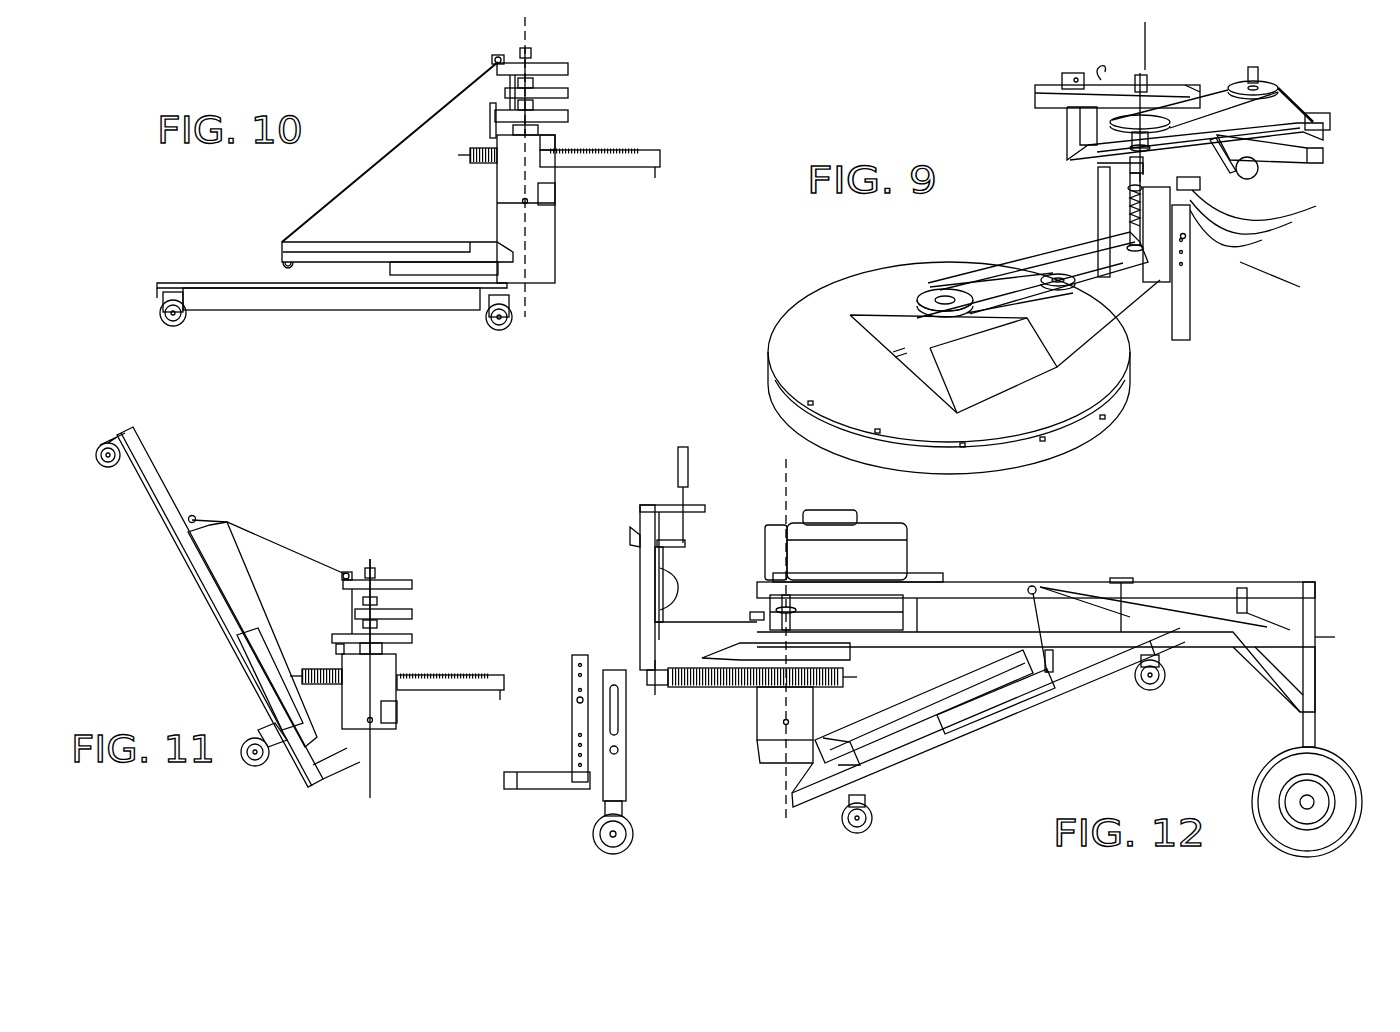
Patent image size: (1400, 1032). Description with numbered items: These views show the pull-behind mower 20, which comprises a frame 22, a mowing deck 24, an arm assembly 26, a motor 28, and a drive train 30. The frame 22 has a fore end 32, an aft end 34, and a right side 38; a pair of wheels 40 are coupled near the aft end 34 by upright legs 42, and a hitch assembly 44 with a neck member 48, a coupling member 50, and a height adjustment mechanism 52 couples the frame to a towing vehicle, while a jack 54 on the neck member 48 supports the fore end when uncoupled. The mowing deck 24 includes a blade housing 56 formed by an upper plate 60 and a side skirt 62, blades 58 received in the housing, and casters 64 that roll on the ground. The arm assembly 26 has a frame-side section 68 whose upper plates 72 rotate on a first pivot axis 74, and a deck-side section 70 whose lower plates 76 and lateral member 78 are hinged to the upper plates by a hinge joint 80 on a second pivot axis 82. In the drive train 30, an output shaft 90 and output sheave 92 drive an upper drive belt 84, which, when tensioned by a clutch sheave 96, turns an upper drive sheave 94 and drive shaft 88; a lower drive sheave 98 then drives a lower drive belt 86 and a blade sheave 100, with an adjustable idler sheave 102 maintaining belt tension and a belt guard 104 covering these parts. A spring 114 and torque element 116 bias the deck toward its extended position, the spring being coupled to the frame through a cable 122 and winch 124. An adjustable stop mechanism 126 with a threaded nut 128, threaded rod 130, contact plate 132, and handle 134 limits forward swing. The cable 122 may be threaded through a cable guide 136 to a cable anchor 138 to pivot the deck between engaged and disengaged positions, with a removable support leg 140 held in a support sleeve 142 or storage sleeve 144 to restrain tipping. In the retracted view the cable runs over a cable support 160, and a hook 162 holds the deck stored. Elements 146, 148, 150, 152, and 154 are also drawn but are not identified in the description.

In FIG. 10, the pull-behind mower 20 is at (615, 97).
In FIG. 9, the pull-behind mower 20 is at (1130, 68).
In FIG. 11, the pull-behind mower 20 is at (361, 515).
In FIG. 12, the pull-behind mower 20 is at (620, 462).
In FIG. 9, the frame 22 is at (1066, 138).
In FIG. 12, the frame 22 is at (1082, 583).
In FIG. 10, the mowing deck 24 is at (197, 276).
In FIG. 9, the mowing deck 24 is at (826, 286).
In FIG. 11, the mowing deck 24 is at (157, 445).
In FIG. 12, the mowing deck 24 is at (948, 776).
In FIG. 10, the arm assembly 26 is at (557, 247).
In FIG. 9, the arm assembly 26 is at (1097, 206).
In FIG. 11, the arm assembly 26 is at (378, 772).
In FIG. 12, the arm assembly 26 is at (786, 794).
In FIG. 12, the motor 28 is at (831, 508).
In FIG. 9, the drive train 30 is at (1128, 212).
In FIG. 10, the fore end 32 is at (531, 91).
In FIG. 9, the fore end 32 is at (1182, 92).
In FIG. 11, the fore end 32 is at (372, 606).
In FIG. 12, the fore end 32 is at (764, 598).
In FIG. 12, the aft end 34 is at (1318, 612).
In FIG. 9, the right side 38 is at (1040, 93).
In FIG. 12, the wheels 40 is at (1262, 775).
In FIG. 12, the upright legs 42 is at (1315, 720).
In FIG. 12, the hitch assembly 44 is at (578, 652).
In FIG. 12, the neck member 48 is at (722, 655).
In FIG. 12, the coupling member 50 is at (550, 775).
In FIG. 12, the height adjustment mechanism 52 is at (570, 668).
In FIG. 12, the jack 54 is at (604, 800).
In FIG. 10, the blade housing 56 is at (215, 312).
In FIG. 9, the blade housing 56 is at (1131, 375).
In FIG. 11, the blade housing 56 is at (133, 535).
In FIG. 12, the blade housing 56 is at (995, 760).
In FIG. 12, the blades 58 is at (1035, 720).
In FIG. 9, the upper plate 60 is at (795, 332).
In FIG. 9, the side skirt 62 is at (1112, 412).
In FIG. 10, the casters 64 is at (170, 325).
In FIG. 11, the casters 64 is at (108, 469).
In FIG. 12, the casters 64 is at (1166, 690).
In FIG. 9, the frame-side section 68 is at (1097, 176).
In FIG. 9, the deck-side section 70 is at (1097, 237).
In FIG. 10, the upper plates 72 is at (507, 185).
In FIG. 9, the upper plates 72 is at (1200, 244).
In FIG. 11, the upper plates 72 is at (393, 696).
In FIG. 12, the upper plates 72 is at (766, 707).
In FIG. 10, the first pivot axis 74 is at (528, 202).
In FIG. 9, the first pivot axis 74 is at (1200, 315).
In FIG. 11, the first pivot axis 74 is at (383, 722).
In FIG. 12, the first pivot axis 74 is at (786, 723).
In FIG. 10, the lower plates 76 is at (542, 262).
In FIG. 9, the lower plates 76 is at (1152, 265).
In FIG. 11, the lower plates 76 is at (333, 777).
In FIG. 12, the lower plates 76 is at (781, 789).
In FIG. 10, the lateral member 78 is at (458, 278).
In FIG. 9, the lateral member 78 is at (1131, 358).
In FIG. 11, the lateral member 78 is at (275, 698).
In FIG. 12, the lateral member 78 is at (880, 765).
In FIG. 10, the hinge joint 80 is at (523, 202).
In FIG. 9, the hinge joint 80 is at (1181, 232).
In FIG. 11, the hinge joint 80 is at (375, 723).
In FIG. 12, the hinge joint 80 is at (786, 724).
In FIG. 10, the second pivot axis 82 is at (527, 28).
In FIG. 9, the second pivot axis 82 is at (1147, 30).
In FIG. 12, the second pivot axis 82 is at (783, 462).
In FIG. 9, the upper drive belt 84 is at (1298, 106).
In FIG. 12, the upper drive belt 84 is at (842, 612).
In FIG. 9, the lower drive belt 86 is at (991, 278).
In FIG. 9, the drive shaft 88 is at (1128, 192).
In FIG. 9, the output shaft 90 is at (1258, 68).
In FIG. 9, the output sheave 92 is at (1277, 84).
In FIG. 9, the upper drive sheave 94 is at (1110, 121).
In FIG. 9, the clutch sheave 96 is at (1332, 118).
In FIG. 12, the clutch sheave 96 is at (753, 620).
In FIG. 9, the lower drive sheave 98 is at (1097, 250).
In FIG. 9, the blade sheave 100 is at (930, 298).
In FIG. 9, the adjustable idler sheave 102 is at (1083, 283).
In FIG. 9, the belt guard 104 is at (999, 361).
In FIG. 10, the spring 114 is at (620, 148).
In FIG. 11, the spring 114 is at (472, 672).
In FIG. 12, the spring 114 is at (832, 690).
In FIG. 10, the torque element 116 is at (620, 168).
In FIG. 11, the torque element 116 is at (472, 692).
In FIG. 12, the torque element 116 is at (690, 692).
In FIG. 10, the cable 122 is at (380, 153).
In FIG. 11, the cable 122 is at (268, 540).
In FIG. 12, the cable 122 is at (1205, 620).
In FIG. 12, the winch 124 is at (1282, 622).
In FIG. 9, the adjustable stop mechanism 126 is at (1258, 170).
In FIG. 9, the threaded nut 128 is at (1272, 205).
In FIG. 9, the threaded rod 130 is at (1259, 217).
In FIG. 9, the contact plate 132 is at (1244, 230).
In FIG. 9, the handle 134 is at (1240, 160).
In FIG. 10, the cable guide 136 is at (497, 57).
In FIG. 9, the cable guide 136 is at (1100, 75).
In FIG. 11, the cable guide 136 is at (368, 570).
In FIG. 10, the cable anchor 138 is at (283, 262).
In FIG. 9, the cable anchor 138 is at (899, 353).
In FIG. 11, the cable anchor 138 is at (195, 516).
In FIG. 9, the removable support leg 140 is at (1192, 311).
In FIG. 9, the support sleeve 142 is at (1183, 238).
In FIG. 10, the storage sleeve 144 is at (492, 60).
In FIG. 9, the storage sleeve 144 is at (1062, 78).
In FIG. 11, the storage sleeve 144 is at (347, 572).
In FIG. 12, the handle post 146 is at (638, 573).
In FIG. 12, the upper bracket 148 is at (634, 530).
In FIG. 12, the lower bracket 150 is at (634, 545).
In FIG. 12, the handle 152 is at (690, 456).
In FIG. 12, the handle mount 154 is at (680, 607).
In FIG. 12, the cable support 160 is at (1032, 586).
In FIG. 12, the hook 162 is at (1130, 618).